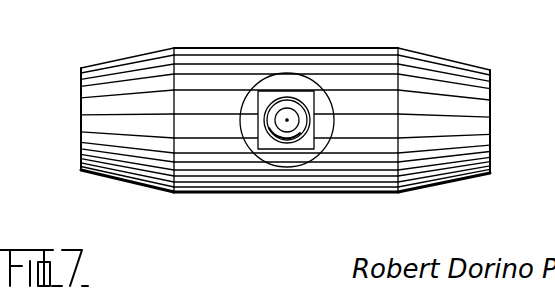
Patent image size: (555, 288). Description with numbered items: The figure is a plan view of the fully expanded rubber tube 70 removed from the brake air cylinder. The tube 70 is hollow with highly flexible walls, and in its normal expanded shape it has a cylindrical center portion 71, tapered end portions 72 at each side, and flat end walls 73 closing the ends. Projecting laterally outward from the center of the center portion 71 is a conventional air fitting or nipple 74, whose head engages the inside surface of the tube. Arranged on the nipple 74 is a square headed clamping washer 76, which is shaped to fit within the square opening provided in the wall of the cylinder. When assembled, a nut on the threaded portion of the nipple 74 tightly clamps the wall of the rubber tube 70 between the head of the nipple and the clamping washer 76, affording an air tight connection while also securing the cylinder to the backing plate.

The rubber tube 70 is at (218, 44).
The cylindrical center portion 71 is at (338, 80).
The tapered end portions 72 is at (122, 92).
The flat end walls 73 is at (80, 108).
The air fitting or nipple 74 is at (278, 124).
The square headed clamping washer 76 is at (258, 97).